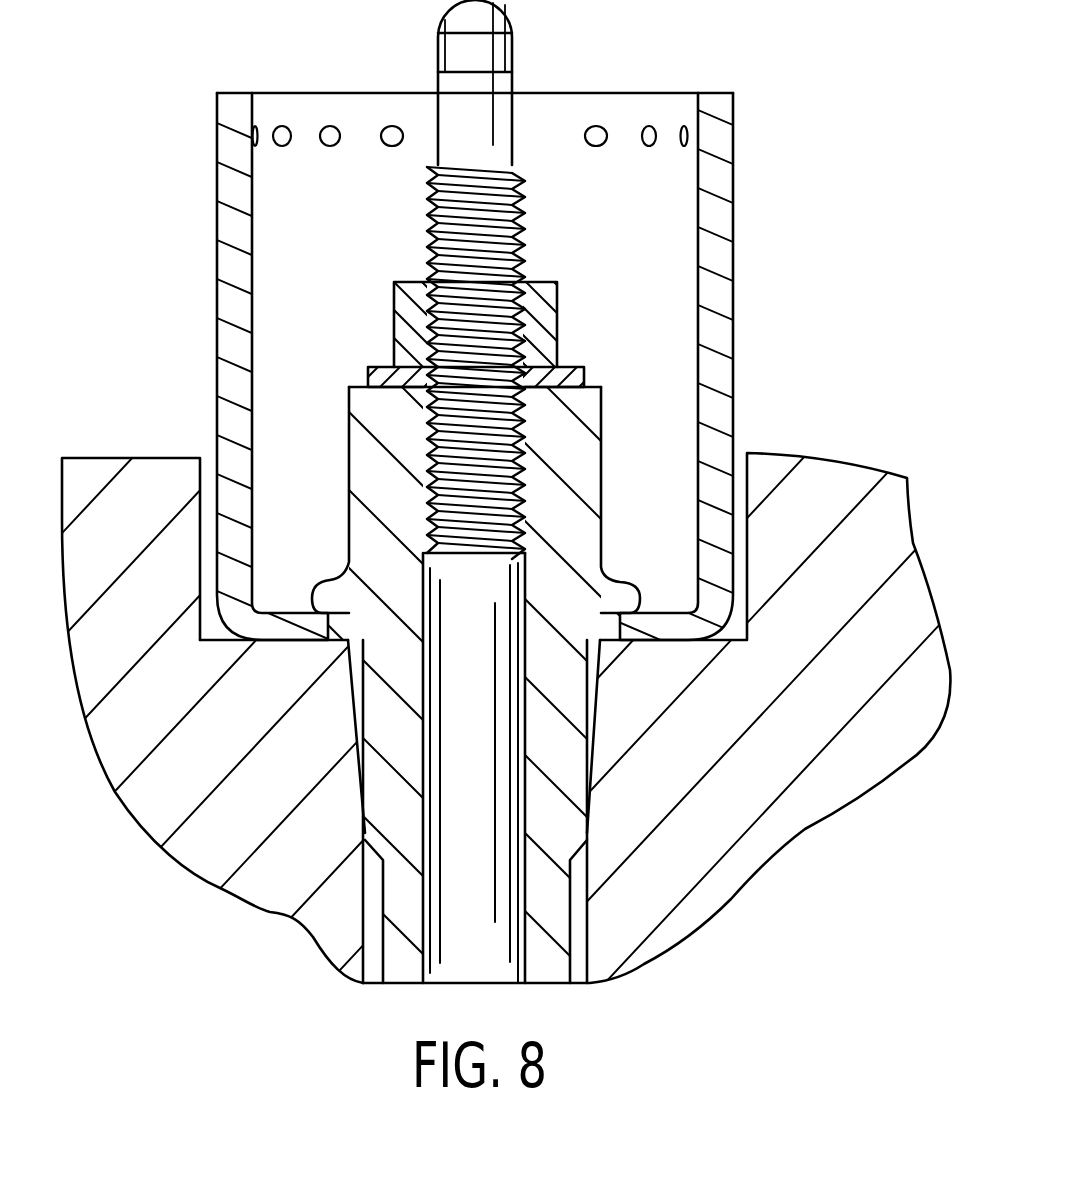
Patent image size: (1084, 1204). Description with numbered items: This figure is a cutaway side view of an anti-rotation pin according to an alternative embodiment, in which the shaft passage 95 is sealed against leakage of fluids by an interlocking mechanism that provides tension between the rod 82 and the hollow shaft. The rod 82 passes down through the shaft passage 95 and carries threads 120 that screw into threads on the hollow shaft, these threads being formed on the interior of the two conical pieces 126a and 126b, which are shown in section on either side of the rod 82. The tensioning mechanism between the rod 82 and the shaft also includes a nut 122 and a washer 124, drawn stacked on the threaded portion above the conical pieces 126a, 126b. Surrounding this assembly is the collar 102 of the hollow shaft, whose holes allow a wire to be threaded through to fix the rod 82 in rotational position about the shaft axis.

The rod 82 is at (503, 913).
The shaft passage 95 is at (423, 820).
The collar 102 is at (733, 340).
The threads 120 is at (430, 217).
The nut 122 is at (394, 320).
The washer 124 is at (368, 376).
The conical piece 126a is at (385, 536).
The conical piece 126b is at (570, 497).